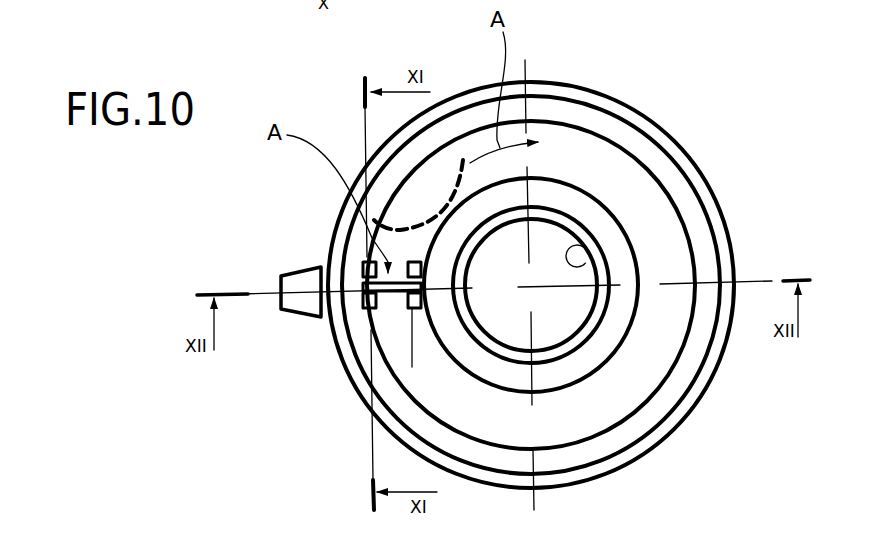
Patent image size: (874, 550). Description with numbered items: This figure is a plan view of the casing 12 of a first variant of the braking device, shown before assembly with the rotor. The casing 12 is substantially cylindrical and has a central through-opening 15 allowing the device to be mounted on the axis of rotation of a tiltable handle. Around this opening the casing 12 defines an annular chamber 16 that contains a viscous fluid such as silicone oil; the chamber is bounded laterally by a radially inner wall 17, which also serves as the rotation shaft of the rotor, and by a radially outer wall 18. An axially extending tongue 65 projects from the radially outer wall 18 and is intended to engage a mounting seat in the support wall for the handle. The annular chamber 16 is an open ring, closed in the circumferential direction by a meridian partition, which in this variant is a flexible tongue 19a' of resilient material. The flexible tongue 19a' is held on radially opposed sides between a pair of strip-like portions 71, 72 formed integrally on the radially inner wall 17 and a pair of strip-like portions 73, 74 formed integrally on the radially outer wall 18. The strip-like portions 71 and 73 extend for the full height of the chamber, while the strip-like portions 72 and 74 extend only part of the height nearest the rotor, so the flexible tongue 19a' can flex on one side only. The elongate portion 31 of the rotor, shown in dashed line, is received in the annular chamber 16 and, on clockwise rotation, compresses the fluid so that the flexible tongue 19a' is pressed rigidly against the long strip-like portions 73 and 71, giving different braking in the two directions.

The casing 12 is at (590, 83).
The radially outer wall 18 is at (626, 138).
The annular chamber 16 is at (643, 200).
The central through-opening 15 is at (588, 263).
The radially inner wall 17 is at (489, 202).
The elongate portion 31 is at (463, 160).
The tongue 65 is at (280, 282).
The strip-like portion 71 is at (366, 258).
The strip-like portion 73 is at (375, 264).
The strip-like portion 74 is at (370, 320).
The flexible tongue 19a' is at (295, 348).
The strip-like portion 72 is at (412, 367).